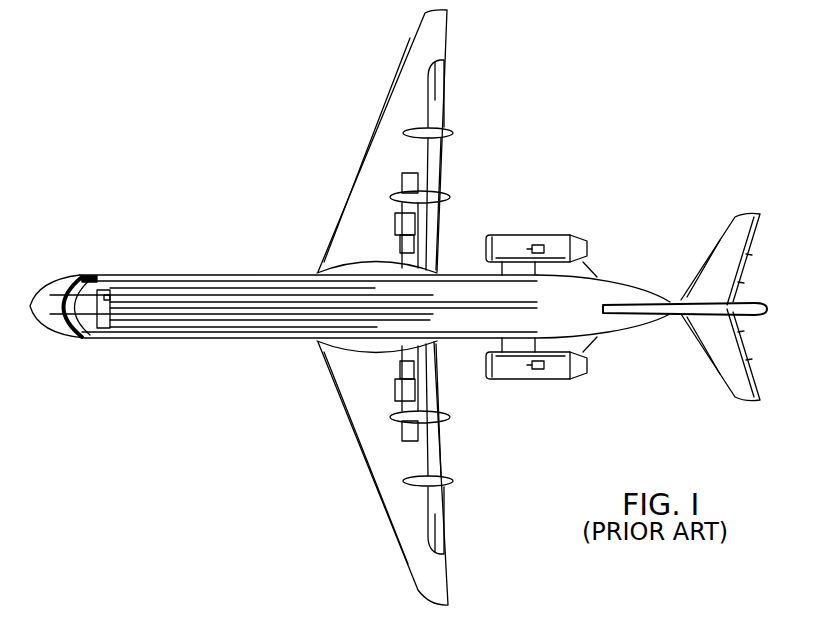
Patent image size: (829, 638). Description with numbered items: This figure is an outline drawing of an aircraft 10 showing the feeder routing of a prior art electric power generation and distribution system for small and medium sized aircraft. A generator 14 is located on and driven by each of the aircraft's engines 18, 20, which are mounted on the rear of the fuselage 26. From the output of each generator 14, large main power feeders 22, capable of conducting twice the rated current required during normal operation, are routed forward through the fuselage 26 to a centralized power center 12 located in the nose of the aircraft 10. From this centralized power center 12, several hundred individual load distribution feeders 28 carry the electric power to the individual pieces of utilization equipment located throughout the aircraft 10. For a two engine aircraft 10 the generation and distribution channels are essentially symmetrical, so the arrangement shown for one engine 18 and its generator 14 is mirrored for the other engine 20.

The aircraft 10 is at (239, 150).
The centralized power center 12 is at (110, 297).
The generator 14 is at (537, 245).
The engine 18 is at (490, 235).
The engine 20 is at (490, 380).
The main power feeders 22 is at (220, 281).
The fuselage 26 is at (167, 274).
The load distribution feeders 28 is at (87, 276).